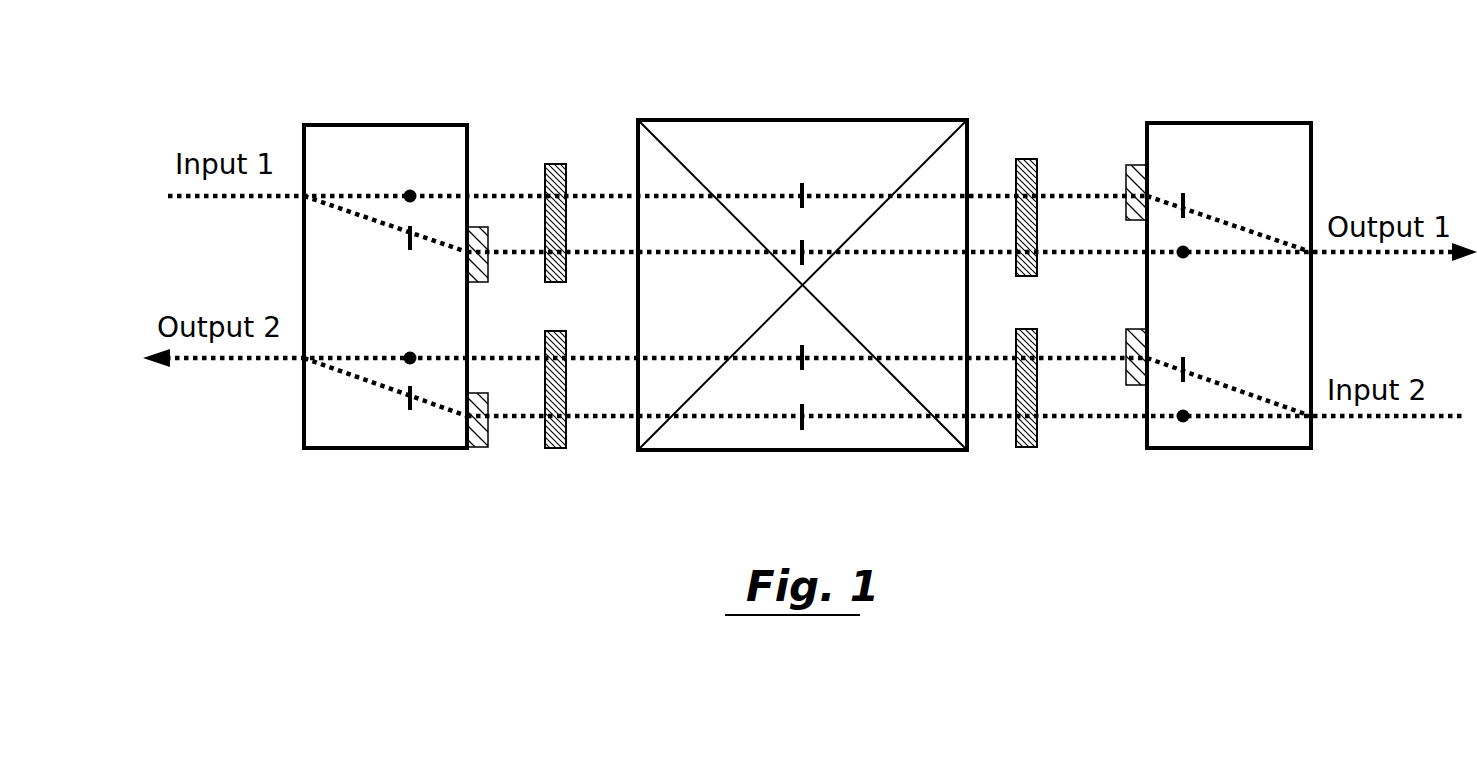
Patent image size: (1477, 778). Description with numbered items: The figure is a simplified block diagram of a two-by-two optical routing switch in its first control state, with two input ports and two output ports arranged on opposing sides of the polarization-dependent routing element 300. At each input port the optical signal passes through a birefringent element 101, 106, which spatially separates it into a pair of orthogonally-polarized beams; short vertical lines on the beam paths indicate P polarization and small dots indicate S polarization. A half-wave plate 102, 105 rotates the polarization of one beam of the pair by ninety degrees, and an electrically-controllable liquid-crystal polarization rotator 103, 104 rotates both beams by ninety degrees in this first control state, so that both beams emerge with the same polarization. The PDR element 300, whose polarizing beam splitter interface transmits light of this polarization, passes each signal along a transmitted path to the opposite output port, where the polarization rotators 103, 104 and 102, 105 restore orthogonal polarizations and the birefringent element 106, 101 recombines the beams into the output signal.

The birefringent element 101 is at (415, 125).
The half-wave plate 102 is at (478, 227).
The liquid-crystal polarization rotator 103 is at (565, 164).
The polarization-dependent routing element 300 is at (775, 120).
The liquid-crystal polarization rotator 104 is at (1027, 159).
The half-wave plate 105 is at (1135, 165).
The birefringent element 106 is at (1232, 123).